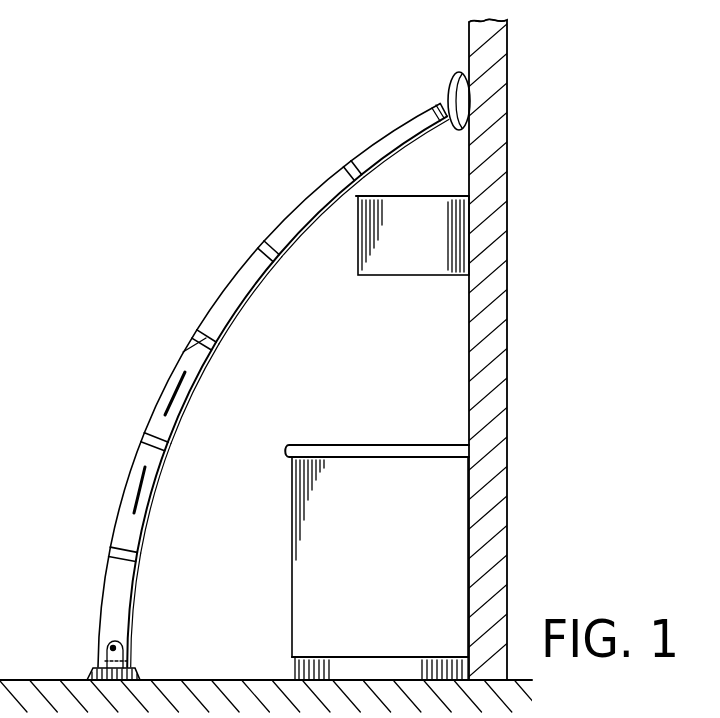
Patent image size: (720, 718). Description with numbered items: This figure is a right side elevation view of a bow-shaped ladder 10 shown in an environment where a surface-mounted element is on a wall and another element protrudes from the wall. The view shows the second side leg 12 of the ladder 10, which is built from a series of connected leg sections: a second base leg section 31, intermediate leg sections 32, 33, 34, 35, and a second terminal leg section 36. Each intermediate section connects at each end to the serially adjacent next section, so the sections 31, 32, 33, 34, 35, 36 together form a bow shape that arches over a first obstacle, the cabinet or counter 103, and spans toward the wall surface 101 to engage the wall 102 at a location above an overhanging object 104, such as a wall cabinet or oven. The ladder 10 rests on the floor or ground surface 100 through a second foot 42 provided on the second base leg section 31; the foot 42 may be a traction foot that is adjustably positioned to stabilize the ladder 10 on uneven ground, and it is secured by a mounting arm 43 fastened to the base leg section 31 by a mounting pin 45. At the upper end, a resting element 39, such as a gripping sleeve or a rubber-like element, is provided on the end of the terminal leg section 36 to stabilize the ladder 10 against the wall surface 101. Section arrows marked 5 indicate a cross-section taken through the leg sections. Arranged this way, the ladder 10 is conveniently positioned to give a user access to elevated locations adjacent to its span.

The ladder 10 is at (237, 386).
The second side leg 12 is at (163, 370).
The second base leg section 31 is at (112, 598).
The leg section 32 is at (135, 497).
The leg section 33 is at (163, 400).
The leg section 34 is at (238, 288).
The leg section 35 is at (307, 208).
The second terminal leg section 36 is at (389, 144).
The resting element 39 is at (447, 93).
The second foot 42 is at (96, 674).
The mounting arm 43 is at (125, 645).
The mounting pin 45 is at (126, 658).
The section line 5- 5 is at (180, 372).
The floor or ground surface 100 is at (243, 679).
The wall surface 101 is at (468, 49).
The wall 102 is at (492, 329).
The cabinet or counter 103 is at (292, 562).
The overhanging object 104 is at (408, 197).